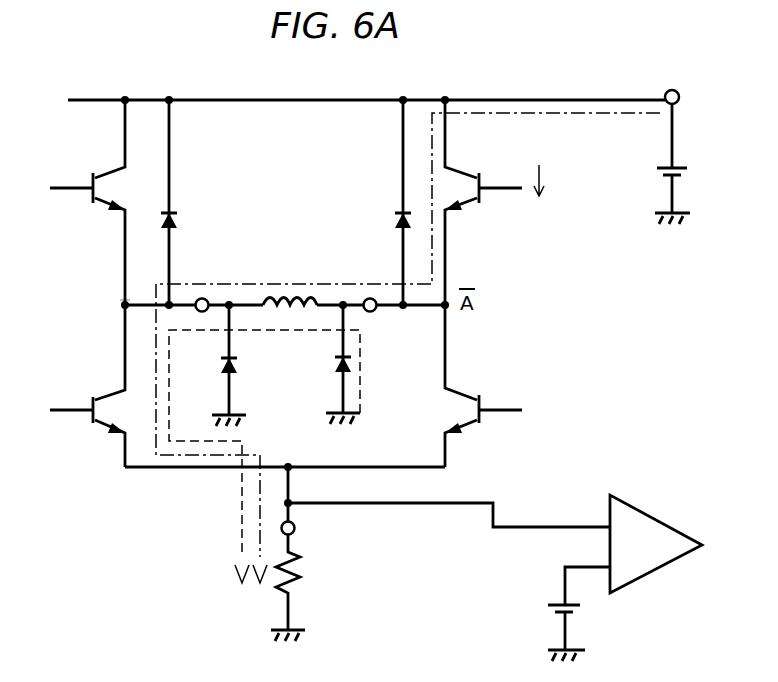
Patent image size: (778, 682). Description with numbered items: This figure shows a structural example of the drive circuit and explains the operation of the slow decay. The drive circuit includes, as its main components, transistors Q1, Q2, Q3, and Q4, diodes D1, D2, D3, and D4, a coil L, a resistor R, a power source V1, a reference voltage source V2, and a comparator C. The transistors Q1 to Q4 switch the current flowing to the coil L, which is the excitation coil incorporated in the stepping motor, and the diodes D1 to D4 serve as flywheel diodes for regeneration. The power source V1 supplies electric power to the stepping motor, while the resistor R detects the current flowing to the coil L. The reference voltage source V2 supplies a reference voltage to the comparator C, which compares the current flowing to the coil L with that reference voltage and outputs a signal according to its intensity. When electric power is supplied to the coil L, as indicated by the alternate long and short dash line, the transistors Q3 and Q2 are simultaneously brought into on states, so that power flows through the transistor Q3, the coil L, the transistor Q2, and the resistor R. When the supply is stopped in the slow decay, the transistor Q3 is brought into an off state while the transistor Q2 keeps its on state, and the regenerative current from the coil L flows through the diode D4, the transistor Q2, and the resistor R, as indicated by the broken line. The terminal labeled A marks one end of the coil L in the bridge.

The transistor Q1 is at (106, 170).
The transistor Q2 is at (106, 392).
The transistor Q3 is at (468, 168).
The transistor Q4 is at (470, 388).
The diode D1 is at (173, 210).
The diode D2 is at (397, 210).
The diode D3 is at (237, 360).
The diode D4 is at (335, 360).
The coil L is at (288, 290).
The resistor R is at (305, 552).
The comparator C is at (648, 508).
The power source V1 is at (678, 150).
The reference voltage source V2 is at (549, 600).
The node A is at (110, 298).